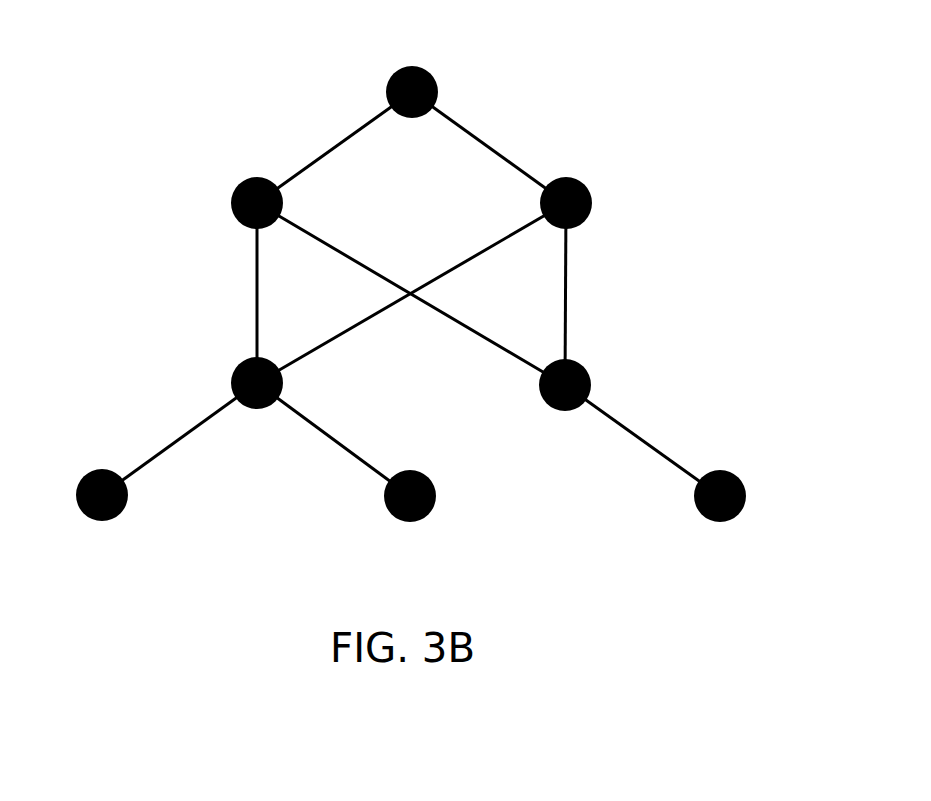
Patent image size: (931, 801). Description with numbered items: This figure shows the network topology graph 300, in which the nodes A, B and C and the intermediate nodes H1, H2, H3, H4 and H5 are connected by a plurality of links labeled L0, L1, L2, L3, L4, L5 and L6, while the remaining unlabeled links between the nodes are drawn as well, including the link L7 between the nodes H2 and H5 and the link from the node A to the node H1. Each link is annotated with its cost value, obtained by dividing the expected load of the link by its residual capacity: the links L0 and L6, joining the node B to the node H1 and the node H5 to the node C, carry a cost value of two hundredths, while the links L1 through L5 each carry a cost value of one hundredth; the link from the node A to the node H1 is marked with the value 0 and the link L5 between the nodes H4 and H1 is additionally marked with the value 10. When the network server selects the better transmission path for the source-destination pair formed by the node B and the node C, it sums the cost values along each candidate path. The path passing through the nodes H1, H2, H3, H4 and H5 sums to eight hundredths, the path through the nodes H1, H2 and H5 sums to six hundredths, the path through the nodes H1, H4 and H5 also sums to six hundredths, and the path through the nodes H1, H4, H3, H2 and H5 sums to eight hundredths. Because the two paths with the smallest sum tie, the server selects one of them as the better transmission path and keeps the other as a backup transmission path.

The network topology graph 300 is at (411, 287).
The node H1 is at (244, 383).
The node H2 is at (245, 192).
The node H3 is at (423, 83).
The node H4 is at (581, 196).
The node H5 is at (581, 385).
The node A is at (102, 517).
The node B is at (410, 518).
The node C is at (720, 518).
The link L0 is at (333, 439).
The link L1 is at (250, 293).
The link L2 is at (334, 147).
The link L3 is at (489, 147).
The link L4 is at (566, 294).
The link L5 is at (411, 293).
The link L6 is at (642, 440).
The link H2-H5 L7 is at (411, 294).
The link weight 10 is at (411, 293).
The link weight 0 is at (179, 439).